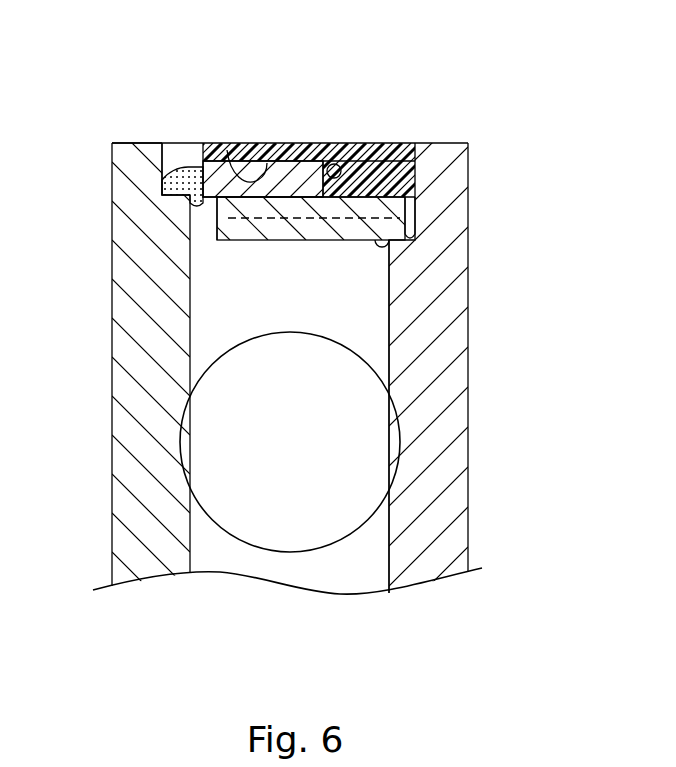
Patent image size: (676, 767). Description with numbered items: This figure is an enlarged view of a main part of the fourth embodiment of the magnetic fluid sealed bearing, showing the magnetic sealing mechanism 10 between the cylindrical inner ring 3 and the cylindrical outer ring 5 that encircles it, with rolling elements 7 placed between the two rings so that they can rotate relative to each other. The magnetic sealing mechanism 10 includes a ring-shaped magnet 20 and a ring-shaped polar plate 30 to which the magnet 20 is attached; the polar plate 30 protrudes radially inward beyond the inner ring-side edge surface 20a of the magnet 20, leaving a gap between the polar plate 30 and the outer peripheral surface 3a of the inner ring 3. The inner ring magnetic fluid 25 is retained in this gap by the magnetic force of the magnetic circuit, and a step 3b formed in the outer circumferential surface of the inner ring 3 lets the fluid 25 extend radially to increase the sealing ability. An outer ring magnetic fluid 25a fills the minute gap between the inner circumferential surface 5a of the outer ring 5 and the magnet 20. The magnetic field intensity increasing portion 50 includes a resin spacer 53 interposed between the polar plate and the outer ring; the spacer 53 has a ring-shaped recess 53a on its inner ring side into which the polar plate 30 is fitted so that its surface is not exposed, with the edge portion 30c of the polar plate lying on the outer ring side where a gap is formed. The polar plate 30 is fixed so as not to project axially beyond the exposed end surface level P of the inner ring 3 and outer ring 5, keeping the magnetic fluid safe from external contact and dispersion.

The inner ring 3 is at (120, 312).
The outer peripheral surface of the inner ring 3a is at (200, 348).
The step 3b is at (163, 177).
The exposed end surface level P is at (113, 142).
The inner ring magnetic fluid 25 is at (177, 160).
The outer ring magnetic fluid 25a is at (415, 207).
The magnetic sealing mechanism 10 is at (295, 160).
The magnetic field intensity increasing portion 50 is at (262, 133).
The spacer 53 is at (390, 143).
The ring-shaped recess 53a is at (227, 150).
The edge portion of the polar plate 30c is at (336, 162).
The magnet 20 is at (397, 229).
The inner ring-side edge surface of the magnet 20a is at (216, 219).
The polar plate 30 is at (245, 200).
The outer ring 5 is at (458, 390).
The inner circumferential surface of the outer ring 5a is at (388, 308).
The rolling elements 7 is at (372, 457).